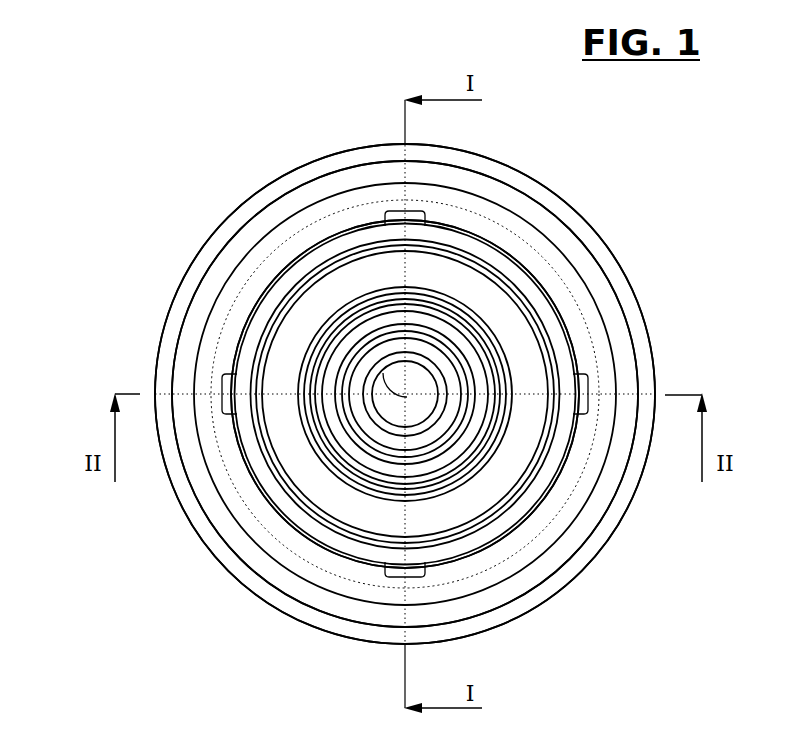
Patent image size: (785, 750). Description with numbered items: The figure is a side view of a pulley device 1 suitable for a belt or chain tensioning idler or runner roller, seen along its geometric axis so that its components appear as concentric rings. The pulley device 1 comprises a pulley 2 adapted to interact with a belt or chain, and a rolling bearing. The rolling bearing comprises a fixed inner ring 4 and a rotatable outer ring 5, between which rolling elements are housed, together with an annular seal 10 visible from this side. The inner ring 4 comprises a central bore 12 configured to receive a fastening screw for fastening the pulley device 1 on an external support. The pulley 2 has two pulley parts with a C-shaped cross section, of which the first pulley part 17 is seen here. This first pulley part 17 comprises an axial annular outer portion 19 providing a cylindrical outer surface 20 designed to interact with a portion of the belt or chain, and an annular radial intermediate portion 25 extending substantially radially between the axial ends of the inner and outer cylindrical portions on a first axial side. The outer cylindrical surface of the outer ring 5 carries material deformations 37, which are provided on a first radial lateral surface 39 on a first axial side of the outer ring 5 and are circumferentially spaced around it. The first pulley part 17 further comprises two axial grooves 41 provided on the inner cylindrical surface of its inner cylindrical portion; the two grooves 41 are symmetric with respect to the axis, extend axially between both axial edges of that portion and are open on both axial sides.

The pulley device 1 is at (275, 158).
The pulley 2 is at (215, 212).
The inner ring 4 is at (510, 432).
The outer ring 5 is at (503, 533).
The annular seal 10 is at (513, 477).
The bore 12 is at (408, 396).
The first pulley part 17 is at (176, 272).
The axial annular outer portion 19 is at (167, 337).
The cylindrical outer surface 20 is at (370, 643).
The annular radial intermediate portion 25 is at (230, 478).
The material deformations 37 is at (455, 250).
The first radial lateral surface 39 is at (273, 503).
The axial grooves 41 is at (221, 380).